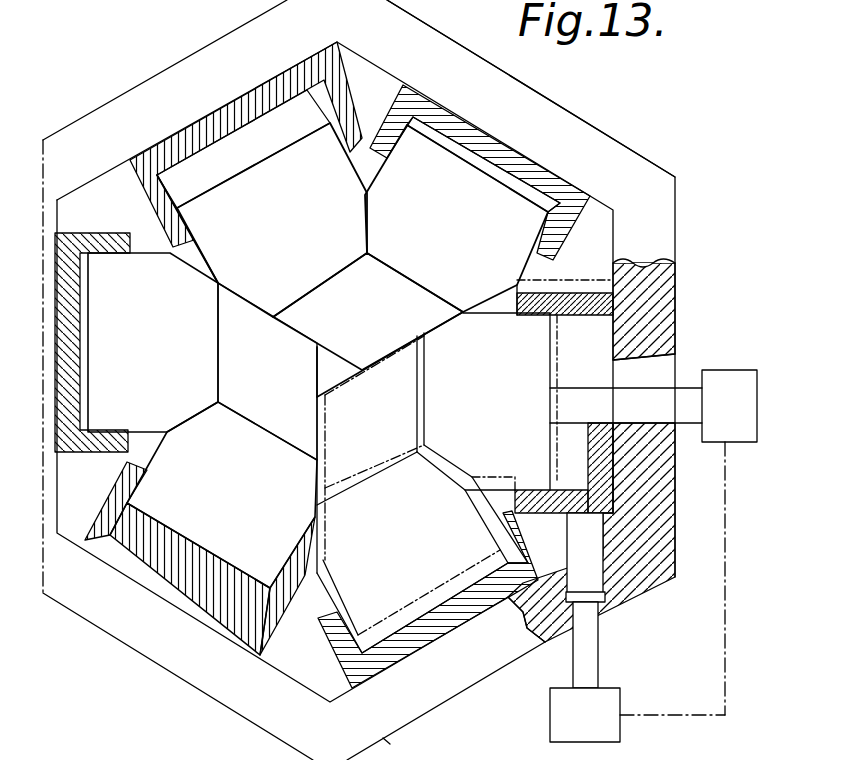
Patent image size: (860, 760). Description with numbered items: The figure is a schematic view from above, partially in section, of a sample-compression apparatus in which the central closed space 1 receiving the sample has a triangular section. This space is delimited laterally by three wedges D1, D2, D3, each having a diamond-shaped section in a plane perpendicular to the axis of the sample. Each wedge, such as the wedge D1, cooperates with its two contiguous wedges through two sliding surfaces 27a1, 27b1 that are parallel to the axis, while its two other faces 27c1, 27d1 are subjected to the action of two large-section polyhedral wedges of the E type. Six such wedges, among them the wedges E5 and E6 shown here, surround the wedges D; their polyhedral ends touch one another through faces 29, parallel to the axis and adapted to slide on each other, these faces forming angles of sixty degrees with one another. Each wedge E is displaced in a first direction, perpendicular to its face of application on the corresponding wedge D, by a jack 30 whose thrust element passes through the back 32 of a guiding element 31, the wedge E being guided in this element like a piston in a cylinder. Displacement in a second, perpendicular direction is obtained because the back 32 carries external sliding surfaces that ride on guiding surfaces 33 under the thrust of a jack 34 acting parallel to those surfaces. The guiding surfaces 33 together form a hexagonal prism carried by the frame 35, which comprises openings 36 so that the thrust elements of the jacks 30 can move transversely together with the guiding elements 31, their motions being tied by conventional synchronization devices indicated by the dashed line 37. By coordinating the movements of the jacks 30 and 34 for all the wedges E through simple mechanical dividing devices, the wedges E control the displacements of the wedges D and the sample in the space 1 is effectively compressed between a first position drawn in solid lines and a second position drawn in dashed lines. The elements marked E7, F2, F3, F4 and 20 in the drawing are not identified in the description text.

The central closed space 1 is at (335, 370).
The hexagonal housing 20 is at (359, 380).
The sliding surface 27a1 is at (384, 357).
The sliding surface 27b1 is at (317, 467).
The face of wedge D1 27c1 is at (356, 489).
The face of wedge D1 27d1 is at (411, 432).
The faces of sliding contact 29 is at (443, 479).
The jack 30 is at (741, 417).
The guiding element 31 is at (575, 303).
The back of guiding element 32 is at (620, 328).
The guiding surface 33 is at (613, 523).
The jack 34 is at (598, 728).
The frame 35 is at (630, 167).
The opening 36 is at (673, 352).
The synchronization device 37 is at (725, 623).
The wedge D1 is at (390, 443).
The wedge D2 is at (387, 318).
The wedge D3 is at (284, 388).
The wedge E5 is at (300, 228).
The wedge E6 is at (469, 231).
The block E7 is at (497, 408).
The block F2 is at (418, 576).
The block F3 is at (240, 506).
The block F4 is at (158, 358).